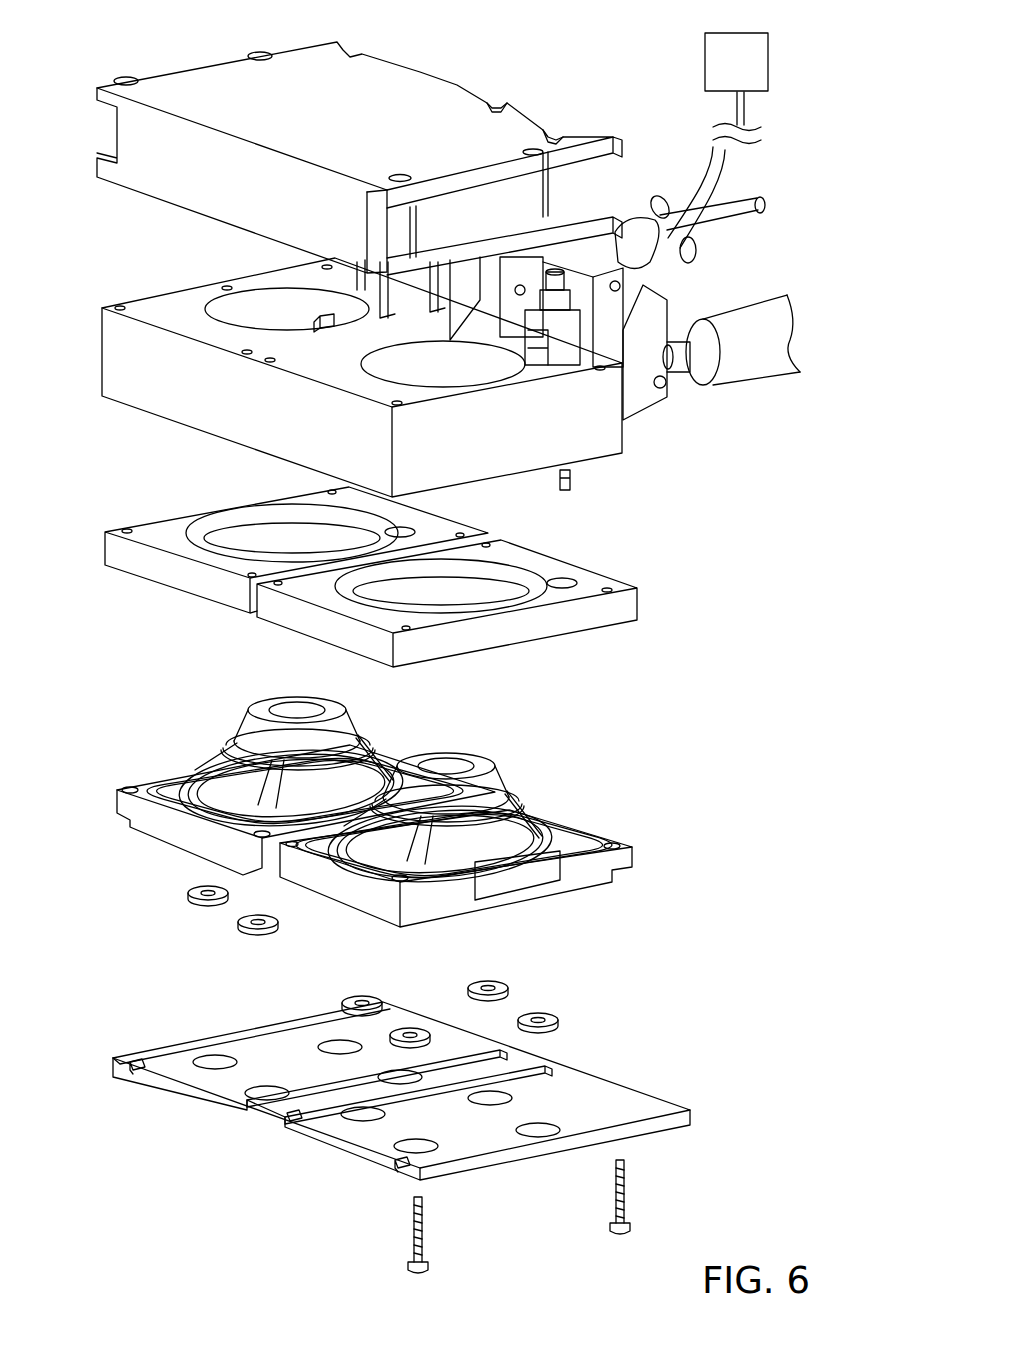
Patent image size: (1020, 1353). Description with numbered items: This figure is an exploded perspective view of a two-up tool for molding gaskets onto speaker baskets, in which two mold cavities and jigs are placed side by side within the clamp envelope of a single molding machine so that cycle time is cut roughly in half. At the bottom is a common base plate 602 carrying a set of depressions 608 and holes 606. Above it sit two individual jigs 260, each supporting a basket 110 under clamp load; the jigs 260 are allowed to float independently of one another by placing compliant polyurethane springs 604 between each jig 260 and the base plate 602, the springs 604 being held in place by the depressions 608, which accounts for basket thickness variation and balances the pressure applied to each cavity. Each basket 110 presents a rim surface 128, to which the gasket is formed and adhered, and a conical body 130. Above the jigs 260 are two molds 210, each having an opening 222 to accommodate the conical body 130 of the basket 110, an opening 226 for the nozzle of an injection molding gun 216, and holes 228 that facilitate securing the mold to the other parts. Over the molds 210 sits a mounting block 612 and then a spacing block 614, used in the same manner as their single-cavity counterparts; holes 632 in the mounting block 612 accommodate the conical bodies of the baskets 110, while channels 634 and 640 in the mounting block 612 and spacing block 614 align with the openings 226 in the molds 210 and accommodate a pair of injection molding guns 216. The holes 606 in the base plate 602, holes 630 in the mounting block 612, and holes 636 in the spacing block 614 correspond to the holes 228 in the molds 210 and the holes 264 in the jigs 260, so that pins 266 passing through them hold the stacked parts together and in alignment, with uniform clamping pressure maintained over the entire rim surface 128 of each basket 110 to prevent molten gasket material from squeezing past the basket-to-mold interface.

The basket 110 is at (378, 728).
The rim surface 128 is at (184, 782).
The conical body 130 is at (530, 800).
The mold 210 is at (150, 582).
The injection molding gun 216 is at (716, 250).
The opening 222 is at (244, 530).
The opening 226 is at (420, 524).
The holes 228 is at (125, 528).
The jig 260 is at (126, 816).
The holes 264 is at (128, 786).
The pins 266 is at (410, 1240).
The base plate 602 is at (258, 1118).
The polyurethane springs 604 is at (186, 892).
The holes 606 is at (136, 1060).
The depressions 608 is at (214, 1060).
The mounting block 612 is at (104, 372).
The spacing block 614 is at (196, 72).
The holes 630 is at (118, 305).
The holes 632 is at (258, 306).
The channels 634 is at (684, 402).
The holes 636 is at (126, 78).
The channels 640 is at (408, 76).